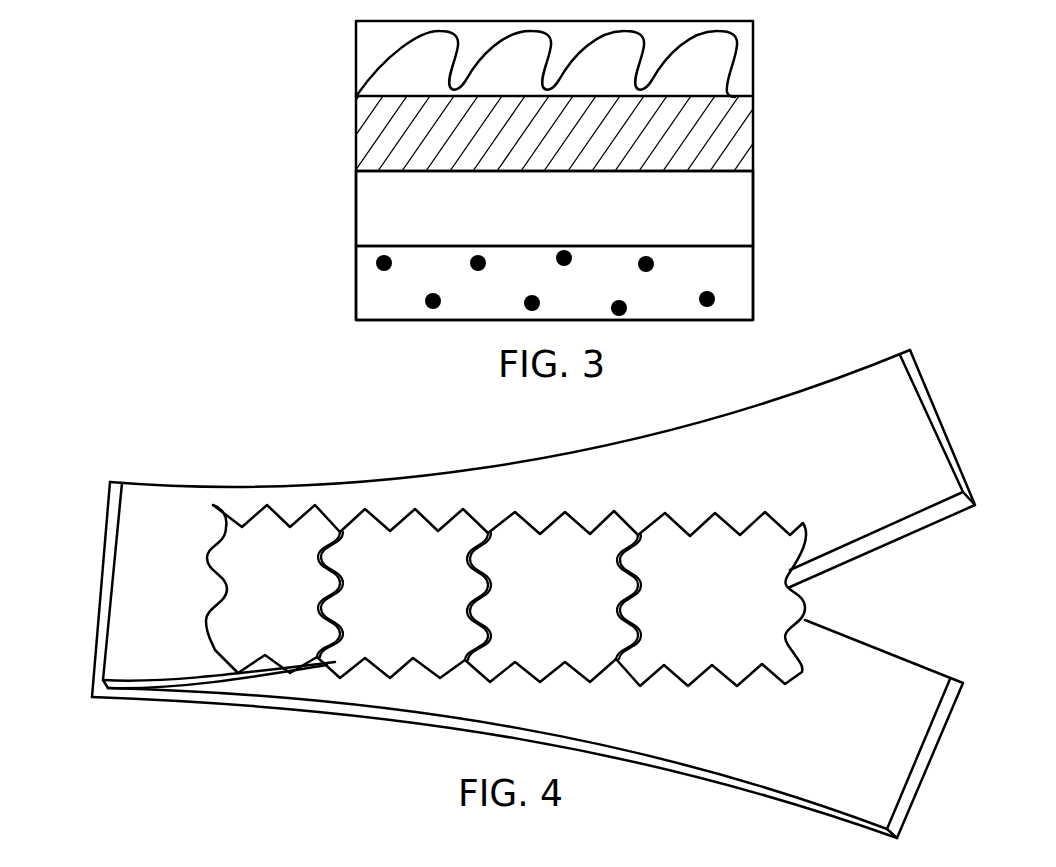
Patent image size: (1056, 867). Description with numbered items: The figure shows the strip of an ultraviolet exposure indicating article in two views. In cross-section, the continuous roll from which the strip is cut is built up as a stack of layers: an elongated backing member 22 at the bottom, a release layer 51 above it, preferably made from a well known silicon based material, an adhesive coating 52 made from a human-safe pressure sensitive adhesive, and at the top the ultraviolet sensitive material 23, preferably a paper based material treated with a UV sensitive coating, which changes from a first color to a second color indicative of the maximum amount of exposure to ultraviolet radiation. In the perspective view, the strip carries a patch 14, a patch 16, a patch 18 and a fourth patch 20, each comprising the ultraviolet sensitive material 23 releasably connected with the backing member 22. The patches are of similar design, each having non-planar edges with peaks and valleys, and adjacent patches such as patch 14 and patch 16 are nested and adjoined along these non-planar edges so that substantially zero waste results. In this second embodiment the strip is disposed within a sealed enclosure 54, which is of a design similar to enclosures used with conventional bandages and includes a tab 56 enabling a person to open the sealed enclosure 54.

In FIG. 3, the patch 14 is at (648, 64).
In FIG. 4, the patch 14 is at (218, 660).
In FIG. 3, the patch 16 is at (648, 64).
In FIG. 4, the patch 16 is at (378, 673).
In FIG. 3, the patch 18 is at (648, 64).
In FIG. 4, the patch 18 is at (530, 675).
In FIG. 3, the fourth patch 20 is at (648, 64).
In FIG. 4, the fourth patch 20 is at (700, 672).
In FIG. 3, the ultraviolet sensitive material 23 is at (753, 61).
In FIG. 3, the adhesive coating 52 is at (753, 128).
In FIG. 3, the release layer 51 is at (753, 209).
In FIG. 3, the backing member 22 is at (753, 280).
In FIG. 4, the sealed enclosure 54 is at (412, 480).
In FIG. 4, the tab 56 is at (923, 430).